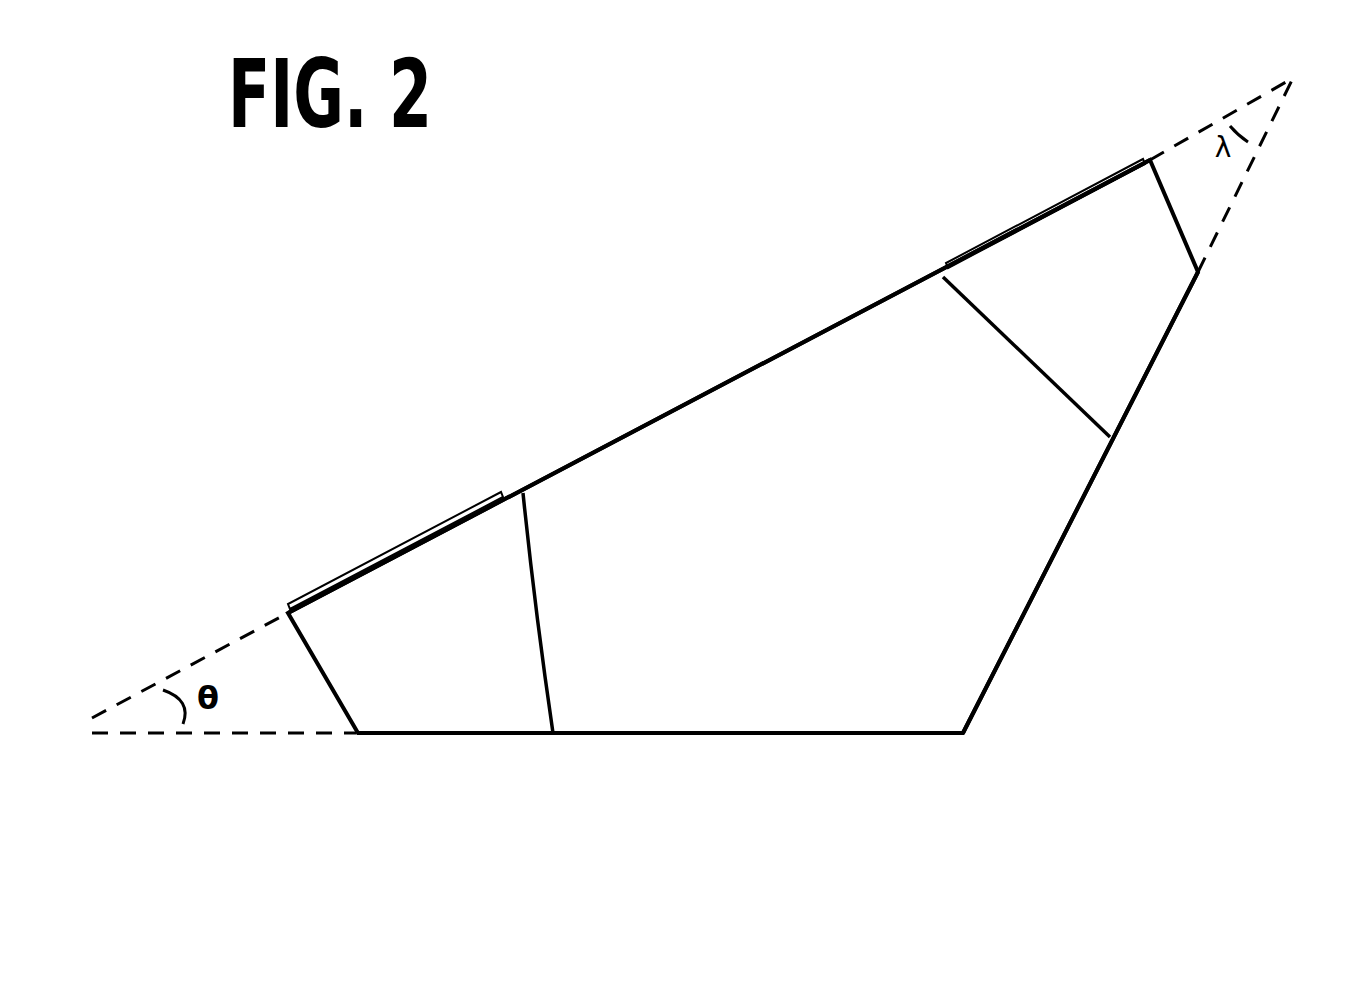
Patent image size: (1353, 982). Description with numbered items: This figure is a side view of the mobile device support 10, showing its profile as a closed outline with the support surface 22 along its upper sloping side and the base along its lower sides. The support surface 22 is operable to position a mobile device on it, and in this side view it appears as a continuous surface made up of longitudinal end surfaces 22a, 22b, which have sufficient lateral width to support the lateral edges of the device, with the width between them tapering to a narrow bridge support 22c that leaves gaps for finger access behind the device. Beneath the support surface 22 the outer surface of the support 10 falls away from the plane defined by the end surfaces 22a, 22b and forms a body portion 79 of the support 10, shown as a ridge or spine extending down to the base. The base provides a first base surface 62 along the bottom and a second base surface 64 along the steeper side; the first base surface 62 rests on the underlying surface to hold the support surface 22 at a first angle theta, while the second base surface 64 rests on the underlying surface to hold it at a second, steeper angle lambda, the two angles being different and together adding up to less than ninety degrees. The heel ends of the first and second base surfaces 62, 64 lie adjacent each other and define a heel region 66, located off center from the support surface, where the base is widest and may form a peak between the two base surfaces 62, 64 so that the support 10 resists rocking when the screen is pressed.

The mobile device support 10 is at (655, 225).
The support surface 22 is at (525, 493).
The longitudinal end surface 22a is at (1108, 175).
The longitudinal end surface 22b is at (422, 538).
The narrow bridge support 22c is at (657, 420).
The first base surface 62 is at (638, 734).
The second base surface 64 is at (1002, 667).
The heel region 66 is at (963, 735).
The body portion 79 is at (950, 515).